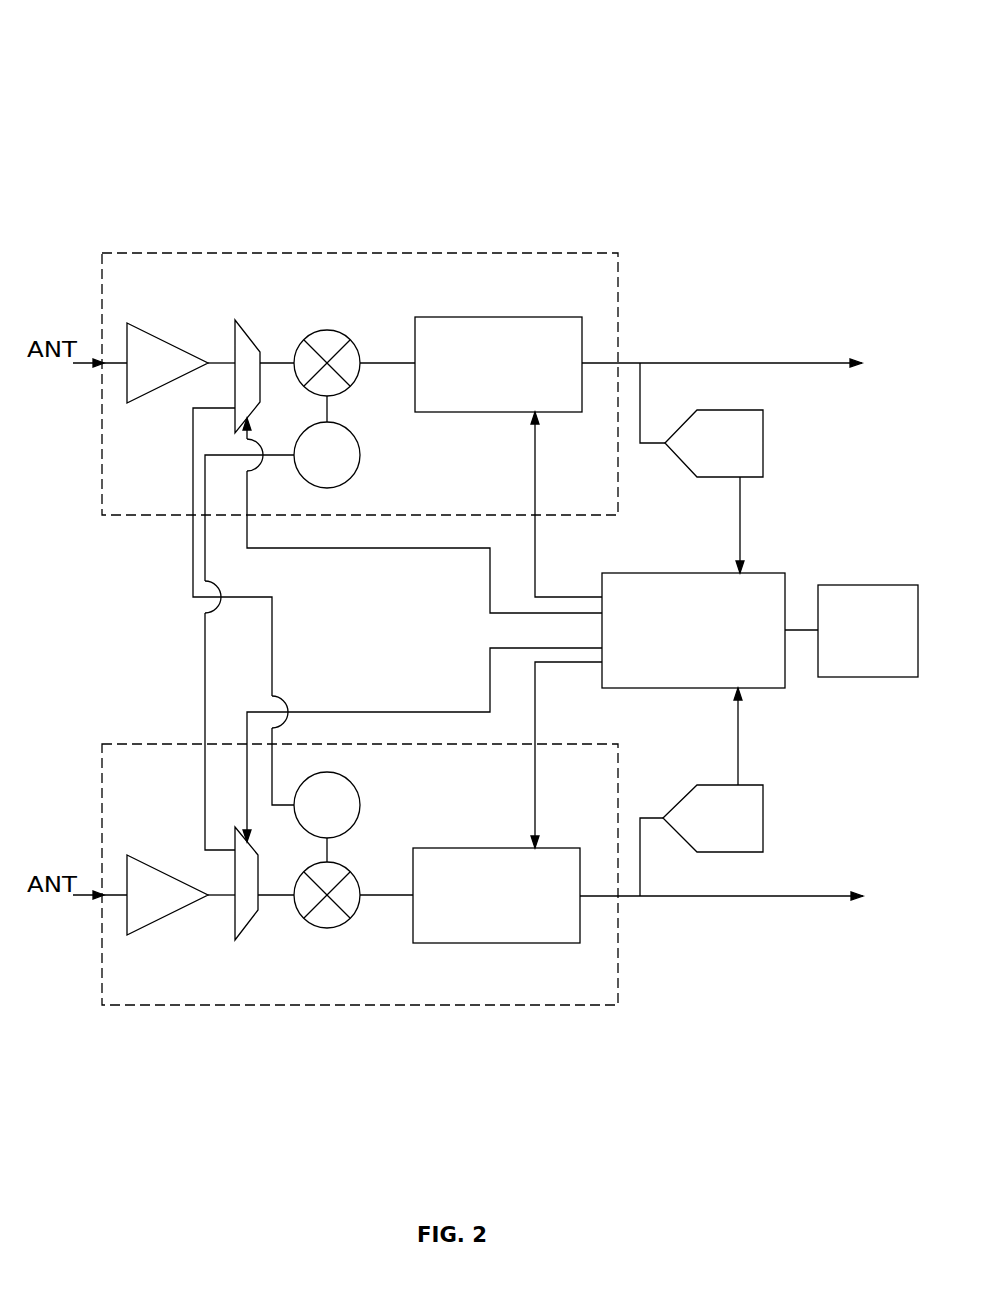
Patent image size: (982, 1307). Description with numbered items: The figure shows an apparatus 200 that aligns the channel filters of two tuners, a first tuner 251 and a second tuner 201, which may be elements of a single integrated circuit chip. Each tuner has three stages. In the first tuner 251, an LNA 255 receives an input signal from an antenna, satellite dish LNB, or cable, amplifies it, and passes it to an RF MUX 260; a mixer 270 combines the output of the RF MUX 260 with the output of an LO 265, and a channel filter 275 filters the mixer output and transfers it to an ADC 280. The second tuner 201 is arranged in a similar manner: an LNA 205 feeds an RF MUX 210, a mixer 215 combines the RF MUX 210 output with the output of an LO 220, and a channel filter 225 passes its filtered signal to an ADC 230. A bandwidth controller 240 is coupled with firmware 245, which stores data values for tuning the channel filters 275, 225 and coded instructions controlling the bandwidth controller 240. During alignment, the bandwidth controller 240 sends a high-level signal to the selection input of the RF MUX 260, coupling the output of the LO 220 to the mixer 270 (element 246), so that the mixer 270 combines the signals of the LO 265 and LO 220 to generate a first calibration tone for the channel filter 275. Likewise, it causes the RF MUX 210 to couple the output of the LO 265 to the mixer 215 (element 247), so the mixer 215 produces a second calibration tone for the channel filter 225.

The apparatus 200 is at (133, 86).
The second tuner 201 is at (178, 253).
The LNA 205 is at (188, 350).
The RF MUX 210 is at (243, 327).
The mixer 215 is at (328, 331).
The LO 220 is at (358, 467).
The channel filter 225 is at (520, 407).
The ADC 230 is at (760, 471).
The bandwidth controller 240 is at (763, 573).
The firmware 245 is at (888, 657).
The coupling of LO 220 output to mixer 270 246 is at (205, 667).
The coupling of LO 265 output to mixer 215 247 is at (273, 663).
The first tuner 251 is at (168, 743).
The LNA 255 is at (188, 880).
The RF MUX 260 is at (248, 925).
The LO 265 is at (360, 803).
The mixer 270 is at (325, 928).
The channel filter 275 is at (518, 938).
The ADC 280 is at (760, 846).